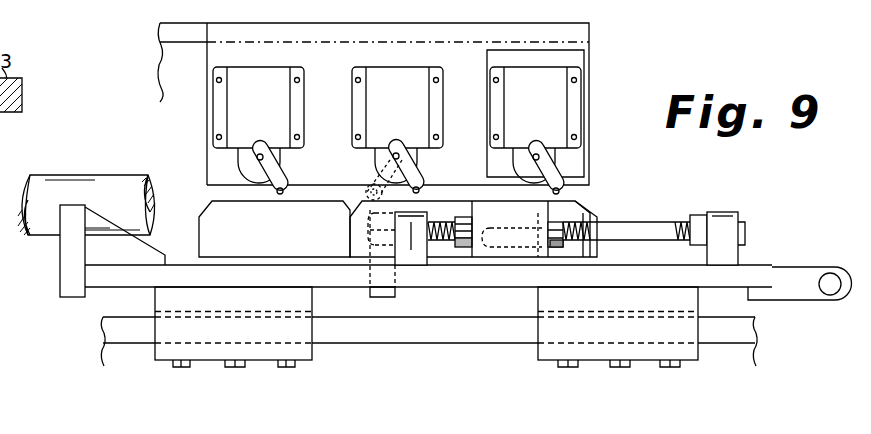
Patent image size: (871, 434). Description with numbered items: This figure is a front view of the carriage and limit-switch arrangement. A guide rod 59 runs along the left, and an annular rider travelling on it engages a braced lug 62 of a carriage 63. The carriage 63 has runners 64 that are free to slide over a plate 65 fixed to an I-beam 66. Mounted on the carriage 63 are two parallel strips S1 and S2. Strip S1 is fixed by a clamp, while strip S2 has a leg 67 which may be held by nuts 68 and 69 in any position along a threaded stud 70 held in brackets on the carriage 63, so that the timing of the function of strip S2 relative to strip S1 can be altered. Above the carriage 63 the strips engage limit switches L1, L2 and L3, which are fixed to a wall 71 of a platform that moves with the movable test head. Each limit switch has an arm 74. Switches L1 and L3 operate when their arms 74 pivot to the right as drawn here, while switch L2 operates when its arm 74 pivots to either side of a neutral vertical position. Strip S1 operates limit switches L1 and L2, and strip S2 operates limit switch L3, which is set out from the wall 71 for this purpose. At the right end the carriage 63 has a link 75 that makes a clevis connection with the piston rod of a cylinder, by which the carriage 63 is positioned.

The guide rod 59 is at (112, 187).
The braced lug 62 is at (65, 262).
The carriage 63 is at (196, 260).
The runners 64 is at (166, 298).
The plate 65 is at (115, 329).
The I-beam 66 is at (103, 352).
The leg 67 is at (498, 211).
The nut 68 is at (463, 230).
The nut 69 is at (563, 248).
The threaded stud 70 is at (647, 213).
The wall 71 is at (583, 33).
The arm 74 is at (278, 173).
The link 75 is at (808, 267).
The limit switch L1 is at (232, 90).
The limit switch L2 is at (372, 90).
The limit switch L3 is at (510, 90).
The strip S1 is at (201, 214).
The strip S2 is at (353, 228).